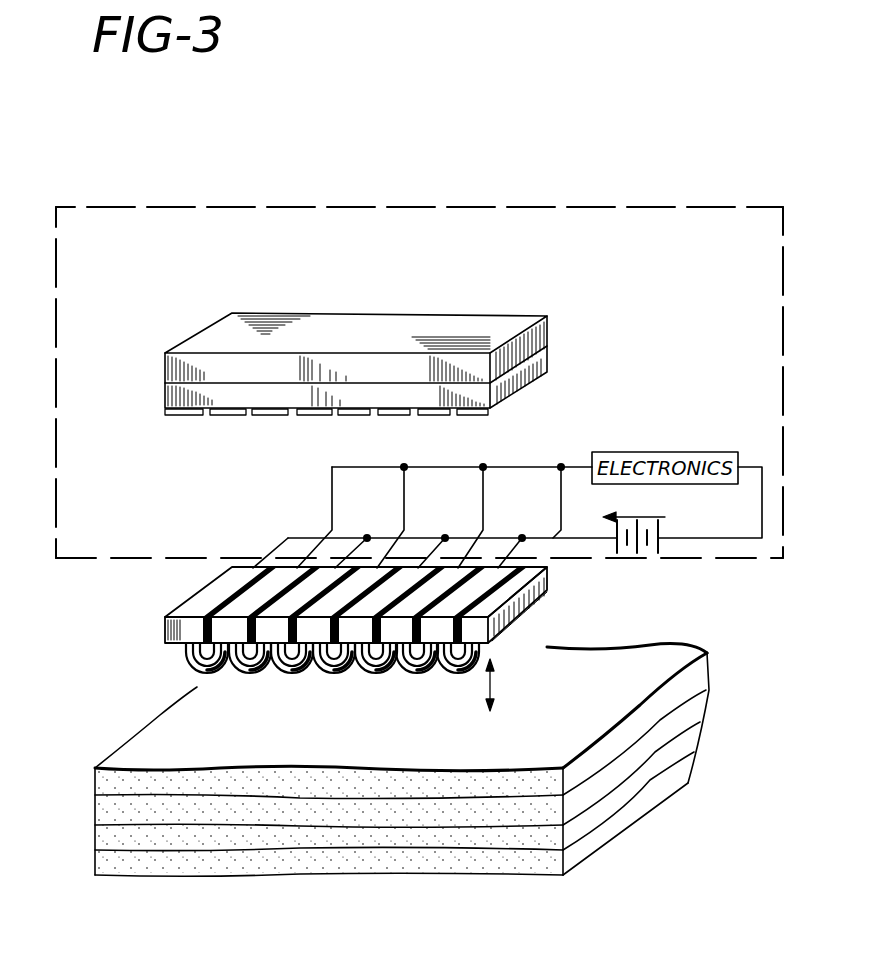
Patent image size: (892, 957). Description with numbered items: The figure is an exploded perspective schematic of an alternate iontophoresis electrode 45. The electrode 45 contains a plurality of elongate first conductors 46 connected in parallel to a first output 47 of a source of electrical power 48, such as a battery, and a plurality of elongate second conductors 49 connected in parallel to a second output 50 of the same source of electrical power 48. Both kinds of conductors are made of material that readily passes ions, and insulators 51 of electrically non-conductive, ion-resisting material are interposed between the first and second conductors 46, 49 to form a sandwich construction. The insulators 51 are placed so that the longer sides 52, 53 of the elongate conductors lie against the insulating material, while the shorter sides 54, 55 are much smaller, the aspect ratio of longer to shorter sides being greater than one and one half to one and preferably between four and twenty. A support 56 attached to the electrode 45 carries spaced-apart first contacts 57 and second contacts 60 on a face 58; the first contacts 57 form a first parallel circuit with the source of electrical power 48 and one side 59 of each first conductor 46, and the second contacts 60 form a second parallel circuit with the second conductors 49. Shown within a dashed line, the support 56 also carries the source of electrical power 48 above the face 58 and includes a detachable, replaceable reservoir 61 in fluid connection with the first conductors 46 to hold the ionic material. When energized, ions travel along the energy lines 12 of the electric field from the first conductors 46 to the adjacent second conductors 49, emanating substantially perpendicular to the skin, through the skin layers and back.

The energy lines 12 is at (421, 660).
The iontophoresis electrode 45 is at (497, 543).
The first conductors 46 is at (347, 574).
The first output 47 is at (307, 538).
The source of electrical power 48 is at (658, 545).
The second conductors 49 is at (337, 652).
The second output 50 is at (363, 467).
The insulators 51 is at (203, 645).
The longer side 52 is at (200, 595).
The longer side 53 is at (547, 578).
The shorter side 54 is at (183, 622).
The shorter side 55 is at (523, 618).
The support 56 is at (192, 415).
The first contacts 57 is at (215, 382).
The face 58 is at (182, 415).
The one side 59 is at (228, 572).
The second contacts 60 is at (225, 415).
The reservoir 61 is at (507, 320).